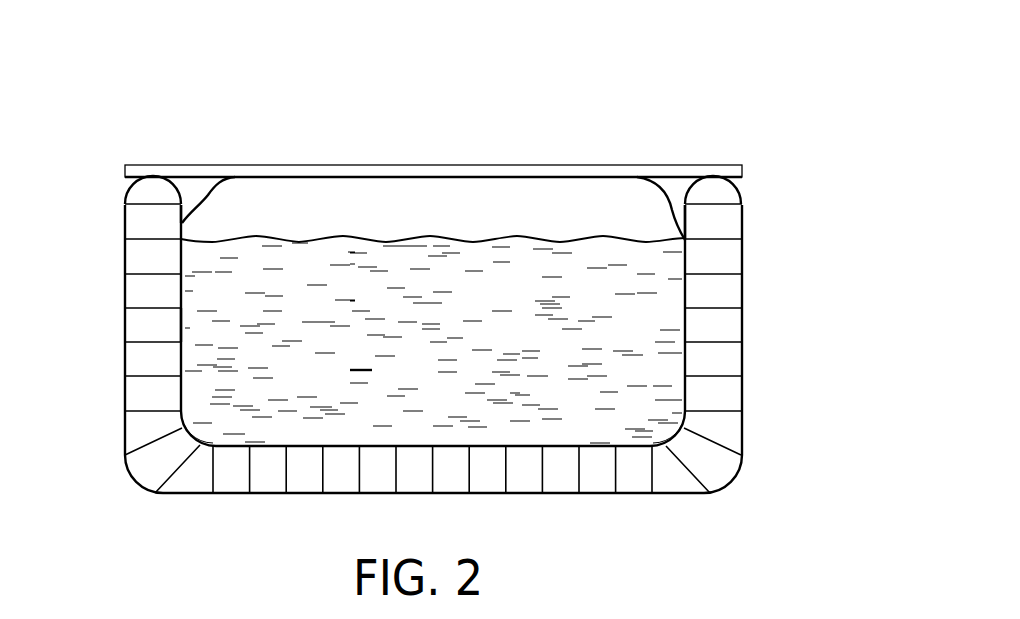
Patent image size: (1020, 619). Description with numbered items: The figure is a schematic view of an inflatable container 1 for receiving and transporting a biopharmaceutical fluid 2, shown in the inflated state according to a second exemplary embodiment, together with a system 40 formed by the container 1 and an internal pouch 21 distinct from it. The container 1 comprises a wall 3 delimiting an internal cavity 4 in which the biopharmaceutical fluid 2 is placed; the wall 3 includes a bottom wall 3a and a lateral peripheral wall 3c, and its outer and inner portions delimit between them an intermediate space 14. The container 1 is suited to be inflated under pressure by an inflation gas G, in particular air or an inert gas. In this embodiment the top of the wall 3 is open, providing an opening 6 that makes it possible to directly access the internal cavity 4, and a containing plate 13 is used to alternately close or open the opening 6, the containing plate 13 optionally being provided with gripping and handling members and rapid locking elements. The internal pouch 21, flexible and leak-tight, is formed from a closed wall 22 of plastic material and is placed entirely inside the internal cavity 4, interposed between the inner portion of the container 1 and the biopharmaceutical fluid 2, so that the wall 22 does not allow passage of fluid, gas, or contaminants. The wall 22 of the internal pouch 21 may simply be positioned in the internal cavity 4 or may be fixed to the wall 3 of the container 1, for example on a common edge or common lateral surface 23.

The system 40 is at (444, 89).
The containing plate 13 is at (483, 172).
The opening 6 is at (198, 190).
The internal cavity 4 is at (420, 163).
The internal pouch 21 is at (669, 200).
The wall 22 is at (685, 200).
The common lateral surface 23 is at (182, 223).
The intermediate space 14 is at (159, 256).
The inflation gas G is at (145, 327).
The lateral peripheral wall 3c is at (742, 231).
The biopharmaceutical fluid 2 is at (628, 332).
The wall 3 is at (723, 332).
The container 1 is at (772, 394).
The bottom wall 3a is at (680, 494).